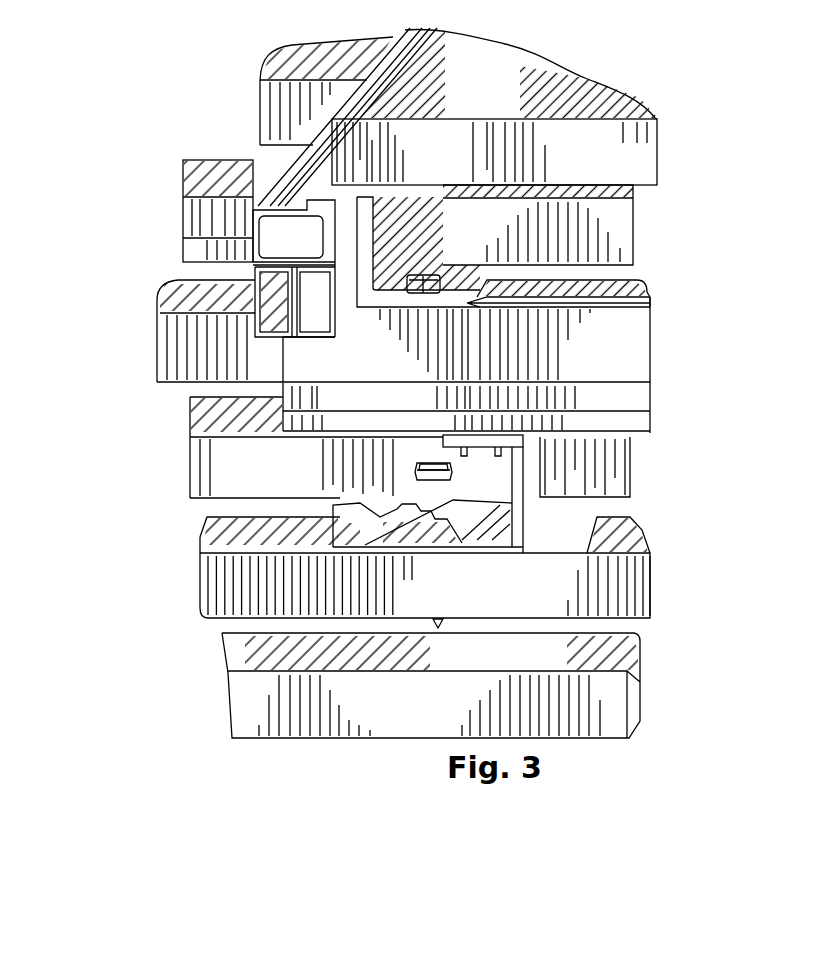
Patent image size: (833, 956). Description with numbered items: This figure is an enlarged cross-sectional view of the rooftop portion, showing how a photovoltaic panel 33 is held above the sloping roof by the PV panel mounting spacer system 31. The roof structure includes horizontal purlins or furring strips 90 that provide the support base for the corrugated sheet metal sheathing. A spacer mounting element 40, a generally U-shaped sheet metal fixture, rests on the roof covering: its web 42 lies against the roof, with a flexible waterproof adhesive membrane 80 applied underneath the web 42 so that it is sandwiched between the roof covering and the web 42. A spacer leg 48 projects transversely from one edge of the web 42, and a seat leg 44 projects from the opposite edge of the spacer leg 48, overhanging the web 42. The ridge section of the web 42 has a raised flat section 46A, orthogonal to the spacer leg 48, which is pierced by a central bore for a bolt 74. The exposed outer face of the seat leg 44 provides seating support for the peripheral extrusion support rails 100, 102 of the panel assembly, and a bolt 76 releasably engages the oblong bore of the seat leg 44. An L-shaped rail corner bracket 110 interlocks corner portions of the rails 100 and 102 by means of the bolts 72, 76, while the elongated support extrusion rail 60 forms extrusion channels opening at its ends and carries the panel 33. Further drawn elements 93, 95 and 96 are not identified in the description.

The PV panel mounting spacer system 31 is at (170, 392).
The PV panel 33 is at (638, 162).
The spacer mounting element 40 is at (572, 473).
The web 42 is at (356, 512).
The seat leg 44 is at (487, 440).
The raised flat section 46A is at (418, 479).
The spacer leg 48 is at (535, 497).
The elongated support extrusion rail 60 is at (293, 158).
The bolt 72 is at (440, 240).
The bolt 74 is at (410, 467).
The bolt 76 is at (473, 267).
The flexible waterproof adhesive membrane 80 is at (336, 551).
The horizontal purlin or furring strip 90 is at (542, 598).
The lower channel 93 is at (255, 297).
The frame member 95 is at (297, 318).
The upper channel 96 is at (258, 165).
The extrusion support rail 100 is at (676, 371).
The extrusion support rail 102 is at (238, 239).
The L-shaped rail corner bracket 110 is at (480, 314).